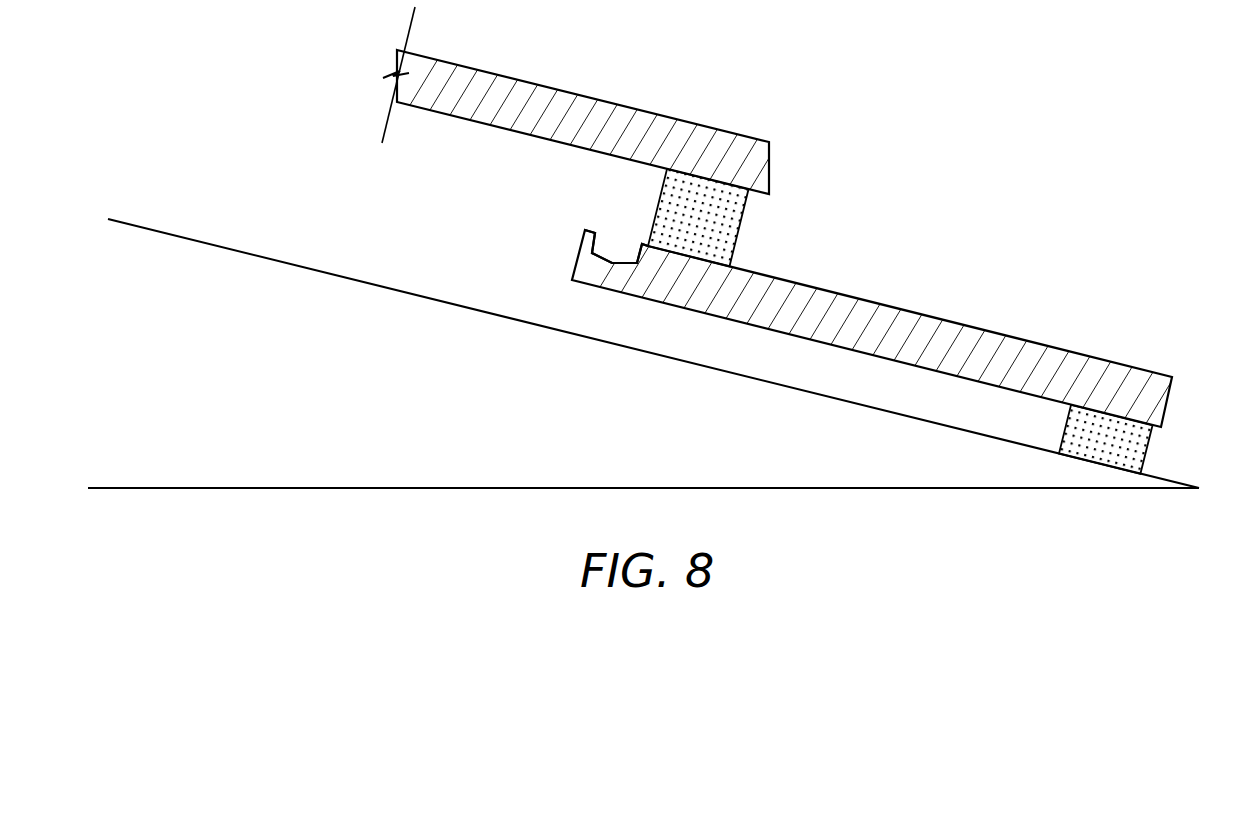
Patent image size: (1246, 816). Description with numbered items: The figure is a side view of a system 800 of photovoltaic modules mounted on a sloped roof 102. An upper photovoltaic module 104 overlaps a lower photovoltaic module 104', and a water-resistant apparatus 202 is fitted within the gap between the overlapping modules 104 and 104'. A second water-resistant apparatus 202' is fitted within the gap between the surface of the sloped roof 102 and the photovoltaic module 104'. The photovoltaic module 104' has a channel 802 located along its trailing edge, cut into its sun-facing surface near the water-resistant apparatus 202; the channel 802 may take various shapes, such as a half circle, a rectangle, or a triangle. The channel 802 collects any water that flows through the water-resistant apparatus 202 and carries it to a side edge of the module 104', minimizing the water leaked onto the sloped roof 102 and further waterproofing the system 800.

The sloped roof 102 is at (321, 430).
The photovoltaic module 104 is at (590, 133).
The photovoltaic module 104' is at (883, 358).
The water-resistant apparatus 202 is at (730, 217).
The water-resistant apparatus 202' is at (1141, 439).
The system 800 is at (1053, 71).
The channel 802 is at (617, 232).